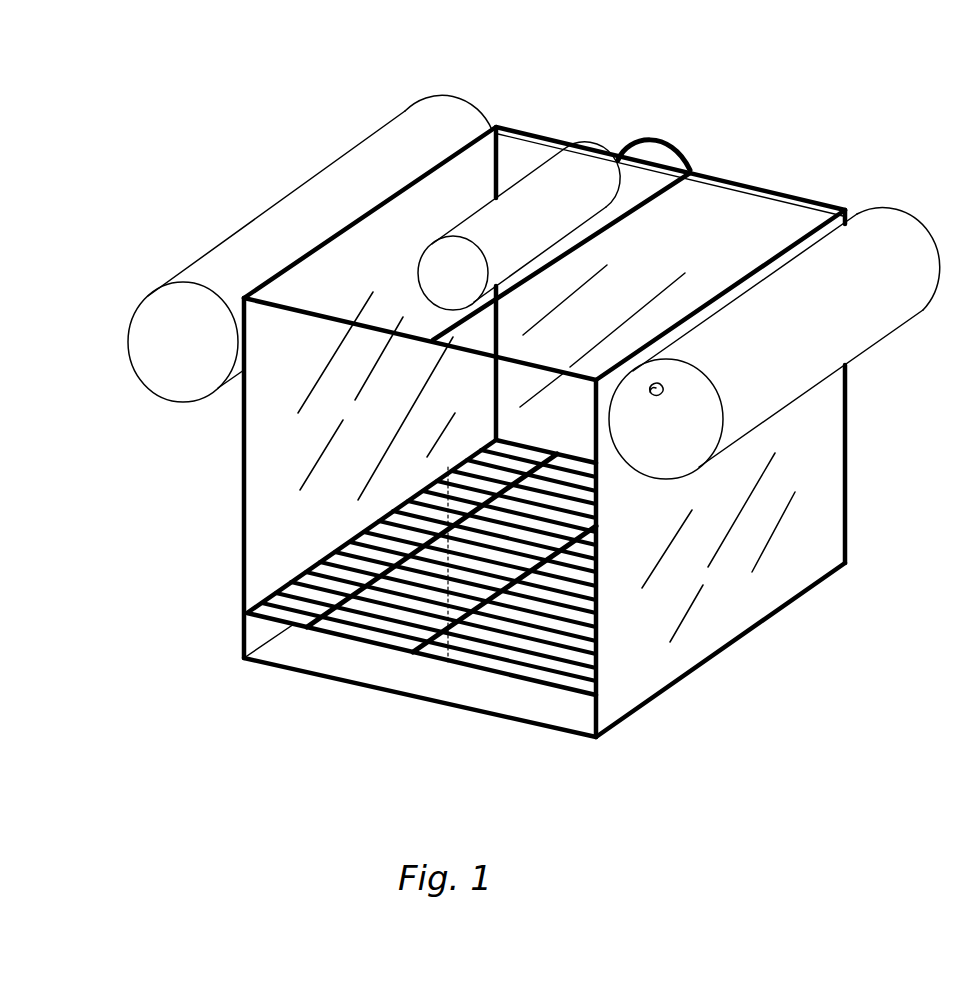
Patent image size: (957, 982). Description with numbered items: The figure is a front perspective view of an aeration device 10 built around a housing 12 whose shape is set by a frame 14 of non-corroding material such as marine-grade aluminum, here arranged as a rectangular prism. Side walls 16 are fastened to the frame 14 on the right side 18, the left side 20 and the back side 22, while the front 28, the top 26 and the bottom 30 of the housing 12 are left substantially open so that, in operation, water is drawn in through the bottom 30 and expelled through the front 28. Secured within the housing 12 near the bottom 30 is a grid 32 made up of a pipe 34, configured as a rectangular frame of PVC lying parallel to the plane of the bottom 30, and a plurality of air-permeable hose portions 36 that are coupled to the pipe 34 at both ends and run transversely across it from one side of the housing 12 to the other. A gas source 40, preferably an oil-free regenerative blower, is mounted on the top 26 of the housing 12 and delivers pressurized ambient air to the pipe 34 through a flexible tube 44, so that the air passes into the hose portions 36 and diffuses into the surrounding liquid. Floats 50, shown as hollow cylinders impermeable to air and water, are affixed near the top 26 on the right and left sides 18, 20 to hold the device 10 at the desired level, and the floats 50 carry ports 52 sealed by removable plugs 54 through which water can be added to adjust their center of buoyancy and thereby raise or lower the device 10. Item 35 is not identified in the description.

The device 10 is at (78, 112).
The housing 12 is at (864, 441).
The frame 14 is at (848, 497).
The side walls 16 is at (262, 464).
The right side 18 is at (200, 541).
The left side 20 is at (760, 658).
The back side 22 is at (734, 140).
The top 26 is at (503, 84).
The front 28 is at (315, 742).
The bottom 30 is at (622, 746).
The grid 32 is at (535, 438).
The pipe 34 is at (302, 565).
The support rod 35 is at (405, 680).
The hose portions 36 is at (403, 520).
The gas source 40 is at (570, 172).
The flexible tube 44 is at (650, 143).
The floats 50 is at (297, 207).
The ports 52 is at (657, 390).
The removable plugs 54 is at (655, 396).